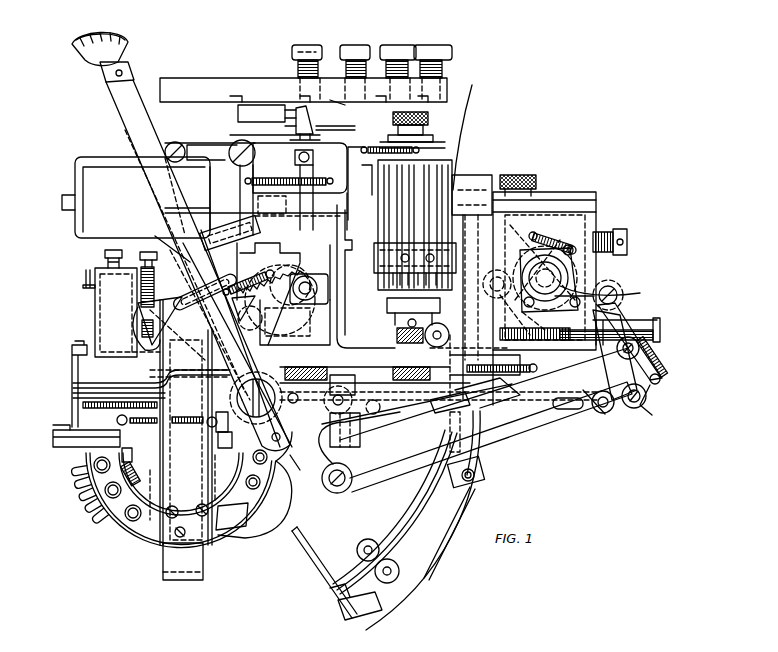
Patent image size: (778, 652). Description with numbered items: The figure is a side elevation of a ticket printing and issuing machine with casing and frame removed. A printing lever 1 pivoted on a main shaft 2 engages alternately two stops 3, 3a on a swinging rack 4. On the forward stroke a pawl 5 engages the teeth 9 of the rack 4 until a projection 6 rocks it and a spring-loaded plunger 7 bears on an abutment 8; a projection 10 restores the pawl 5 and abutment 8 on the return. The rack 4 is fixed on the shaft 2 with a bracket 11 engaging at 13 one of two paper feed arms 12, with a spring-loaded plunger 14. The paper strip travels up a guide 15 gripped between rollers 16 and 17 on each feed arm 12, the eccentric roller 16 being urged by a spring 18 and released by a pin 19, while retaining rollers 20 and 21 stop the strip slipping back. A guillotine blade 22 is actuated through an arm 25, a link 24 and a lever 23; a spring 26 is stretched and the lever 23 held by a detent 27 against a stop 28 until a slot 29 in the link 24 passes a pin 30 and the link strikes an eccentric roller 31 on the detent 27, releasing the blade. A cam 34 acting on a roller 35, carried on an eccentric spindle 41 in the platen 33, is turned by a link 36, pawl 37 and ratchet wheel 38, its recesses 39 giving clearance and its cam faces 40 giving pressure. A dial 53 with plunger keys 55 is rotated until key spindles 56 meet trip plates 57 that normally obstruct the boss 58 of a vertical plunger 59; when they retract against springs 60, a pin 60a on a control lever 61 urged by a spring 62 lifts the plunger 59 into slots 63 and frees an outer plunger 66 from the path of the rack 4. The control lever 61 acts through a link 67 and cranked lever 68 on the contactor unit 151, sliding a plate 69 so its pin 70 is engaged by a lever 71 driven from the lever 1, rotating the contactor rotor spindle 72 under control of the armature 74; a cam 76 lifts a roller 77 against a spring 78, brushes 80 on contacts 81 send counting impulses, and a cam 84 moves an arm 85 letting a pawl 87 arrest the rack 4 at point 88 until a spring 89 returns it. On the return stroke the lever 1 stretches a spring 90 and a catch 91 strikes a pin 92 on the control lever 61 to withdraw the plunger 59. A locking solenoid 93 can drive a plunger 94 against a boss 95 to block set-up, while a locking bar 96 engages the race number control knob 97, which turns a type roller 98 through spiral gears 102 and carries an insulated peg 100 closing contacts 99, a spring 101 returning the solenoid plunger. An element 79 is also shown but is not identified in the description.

The printing lever 1 is at (181, 241).
The main shaft 2 is at (256, 395).
The stop 3 is at (231, 338).
The stop 3a is at (205, 285).
The swinging rack 4 is at (171, 328).
The pawl 5 is at (275, 280).
The projection 6 is at (138, 318).
The spring-loaded plunger 7 is at (248, 306).
The abutment 8 is at (295, 322).
The teeth 9 is at (283, 269).
The projection 10 is at (300, 265).
The bracket 11 is at (356, 452).
The paper feed arms 12 is at (358, 429).
The engagement point 13 is at (345, 382).
The spring-loaded plunger 14 is at (328, 406).
The guide 15 is at (405, 530).
The roller 16 is at (440, 420).
The roller 17 is at (505, 403).
The spring 18 is at (384, 413).
The pin 19 is at (436, 409).
The retaining roller 20 is at (357, 548).
The retaining roller 21 is at (392, 566).
The guillotine blade 22 is at (471, 290).
The lever 23 is at (545, 220).
The link 24 is at (542, 410).
The arm 25 is at (302, 455).
The spring 26 is at (645, 328).
The detent 27 is at (651, 402).
The stop 28 is at (618, 352).
The slot 29 is at (592, 405).
The pin 30 is at (614, 372).
The adjustable eccentric roller 31 is at (636, 409).
The platen 33 is at (506, 315).
The cam 34 is at (535, 337).
The roller 35 is at (539, 271).
The link 36 is at (494, 361).
The pawl 37 is at (546, 278).
The ratchet wheel 38 is at (612, 282).
The recesses 39 is at (528, 322).
The cam faces 40 is at (594, 262).
The roller spindle 41 is at (498, 284).
The dial 53 is at (316, 134).
The plunger keys 55 is at (396, 44).
The key spindles 56 is at (350, 66).
The trip plates 57 is at (261, 113).
The boss 58 is at (314, 156).
The vertical plunger 59 is at (314, 112).
The springs 60 is at (330, 128).
The pin 60a is at (362, 180).
The control lever 61 is at (256, 164).
The spring 62 is at (255, 192).
The slots 63 is at (425, 94).
The outer plunger 66 is at (306, 300).
The link 67 is at (162, 210).
The cranked lever 68 is at (124, 492).
The plate 69 is at (148, 495).
The pin 70 is at (178, 542).
The lever 71 is at (254, 485).
The contactor rotor spindle 72 is at (205, 422).
The armature 74 is at (90, 441).
The cam 76 is at (220, 477).
The roller 77 is at (231, 438).
The spring 78 is at (100, 402).
The box 79 is at (121, 303).
The brushes 80 is at (246, 487).
The contacts 81 is at (137, 456).
The cam 84 is at (139, 474).
The arm 85 is at (255, 463).
The pawl 87 is at (251, 318).
The point 88 is at (186, 422).
The spring 89 is at (117, 421).
The spring 90 is at (248, 279).
The catch 91 is at (282, 216).
The pin 92 is at (230, 232).
The locking solenoid 93 is at (136, 197).
The plunger 94 is at (230, 200).
The boss 95 is at (272, 205).
The locking bar 96 is at (366, 276).
The race number control knob 97 is at (428, 118).
The type roller 98 is at (413, 312).
The contacts 99 is at (357, 183).
The insulated peg 100 is at (380, 154).
The spring 101 is at (400, 153).
The spiral gears 102 is at (425, 345).
The contactor unit 151 is at (118, 533).